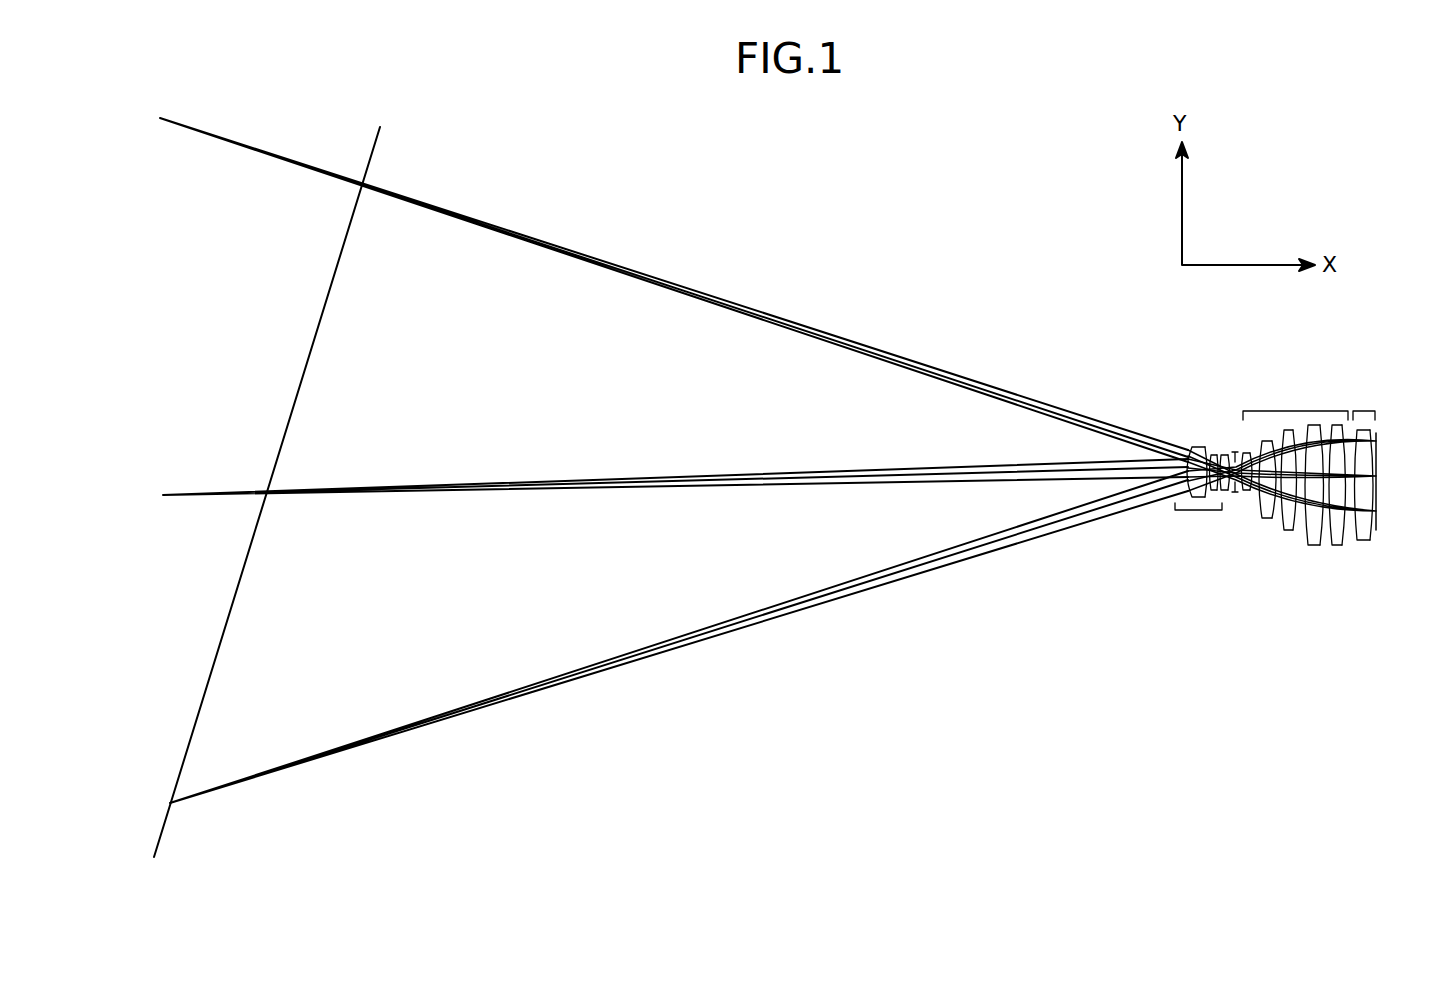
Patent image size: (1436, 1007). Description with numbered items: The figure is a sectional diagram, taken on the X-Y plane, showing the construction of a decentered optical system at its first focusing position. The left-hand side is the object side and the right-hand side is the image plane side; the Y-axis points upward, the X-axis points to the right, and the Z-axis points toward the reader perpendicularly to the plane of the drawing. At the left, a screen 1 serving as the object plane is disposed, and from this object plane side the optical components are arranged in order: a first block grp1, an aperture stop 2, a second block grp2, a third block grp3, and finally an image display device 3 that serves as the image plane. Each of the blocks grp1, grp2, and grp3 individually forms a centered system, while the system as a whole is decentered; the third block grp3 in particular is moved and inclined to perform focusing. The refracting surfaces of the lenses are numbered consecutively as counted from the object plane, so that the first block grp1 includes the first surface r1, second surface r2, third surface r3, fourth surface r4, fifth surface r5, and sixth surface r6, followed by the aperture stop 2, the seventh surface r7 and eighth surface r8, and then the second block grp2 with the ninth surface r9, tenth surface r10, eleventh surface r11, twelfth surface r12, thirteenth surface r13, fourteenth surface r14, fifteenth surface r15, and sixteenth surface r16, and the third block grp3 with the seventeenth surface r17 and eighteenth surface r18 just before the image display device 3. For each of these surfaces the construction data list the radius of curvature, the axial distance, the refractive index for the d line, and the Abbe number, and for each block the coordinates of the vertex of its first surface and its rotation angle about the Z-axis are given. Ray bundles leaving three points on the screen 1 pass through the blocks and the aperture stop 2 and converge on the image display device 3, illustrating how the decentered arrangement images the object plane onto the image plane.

The screen 1 is at (373, 150).
The aperture stop 2 is at (1235, 455).
The image display device 3 is at (1378, 446).
The first block grp1 is at (1191, 520).
The second block grp2 is at (1295, 400).
The third block grp3 is at (1371, 400).
The first surface r1 is at (1187, 455).
The second surface r2 is at (1194, 450).
The third surface r3 is at (1210, 455).
The fourth surface r4 is at (1216, 455).
The fifth surface r5 is at (1221, 455).
The sixth surface r6 is at (1227, 455).
The seventh surface r7 is at (1242, 500).
The eighth surface r8 is at (1251, 505).
The ninth surface r9 is at (1263, 515).
The tenth surface r10 is at (1273, 518).
The eleventh surface r11 is at (1284, 528).
The twelfth surface r12 is at (1294, 532).
The thirteenth surface r13 is at (1308, 547).
The fourteenth surface r14 is at (1320, 547).
The fifteenth surface r15 is at (1333, 548).
The sixteenth surface r16 is at (1342, 547).
The seventeenth surface r17 is at (1358, 541).
The eighteenth surface r18 is at (1371, 541).